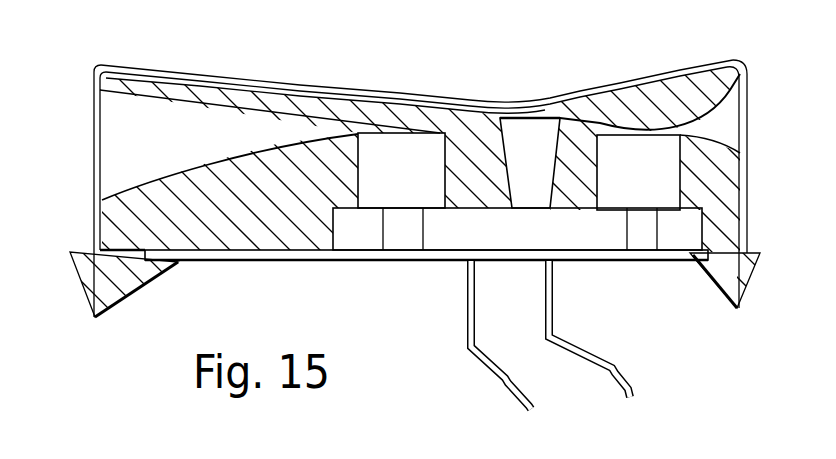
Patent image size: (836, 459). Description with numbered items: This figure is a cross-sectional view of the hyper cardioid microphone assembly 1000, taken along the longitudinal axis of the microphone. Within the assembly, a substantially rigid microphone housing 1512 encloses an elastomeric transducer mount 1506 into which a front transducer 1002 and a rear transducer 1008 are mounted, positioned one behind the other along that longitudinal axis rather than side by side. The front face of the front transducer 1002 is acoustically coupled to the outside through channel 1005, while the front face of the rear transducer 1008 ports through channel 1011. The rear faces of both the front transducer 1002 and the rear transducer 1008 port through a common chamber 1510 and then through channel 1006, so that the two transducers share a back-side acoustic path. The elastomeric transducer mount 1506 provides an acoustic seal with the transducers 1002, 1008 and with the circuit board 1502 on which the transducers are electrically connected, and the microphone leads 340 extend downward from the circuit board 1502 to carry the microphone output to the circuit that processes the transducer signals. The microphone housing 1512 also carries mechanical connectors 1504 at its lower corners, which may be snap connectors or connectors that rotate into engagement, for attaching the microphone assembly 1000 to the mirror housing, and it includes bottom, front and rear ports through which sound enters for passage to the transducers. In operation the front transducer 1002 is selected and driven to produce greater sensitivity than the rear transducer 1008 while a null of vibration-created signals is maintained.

The hyper cardioid microphone assembly 1000 is at (77, 53).
The microphone housing 1512 is at (260, 77).
The channel 1005 is at (135, 157).
The front transducer 1002 is at (432, 145).
The channel 1006 is at (535, 133).
The rear transducer 1008 is at (615, 152).
The channel 1011 is at (715, 122).
The elastomeric transducer mount 1506 is at (256, 236).
The circuit board 1502 is at (615, 263).
The chamber 1510 is at (472, 230).
The mechanical connectors 1504 is at (87, 283).
The microphone leads 340 is at (536, 405).